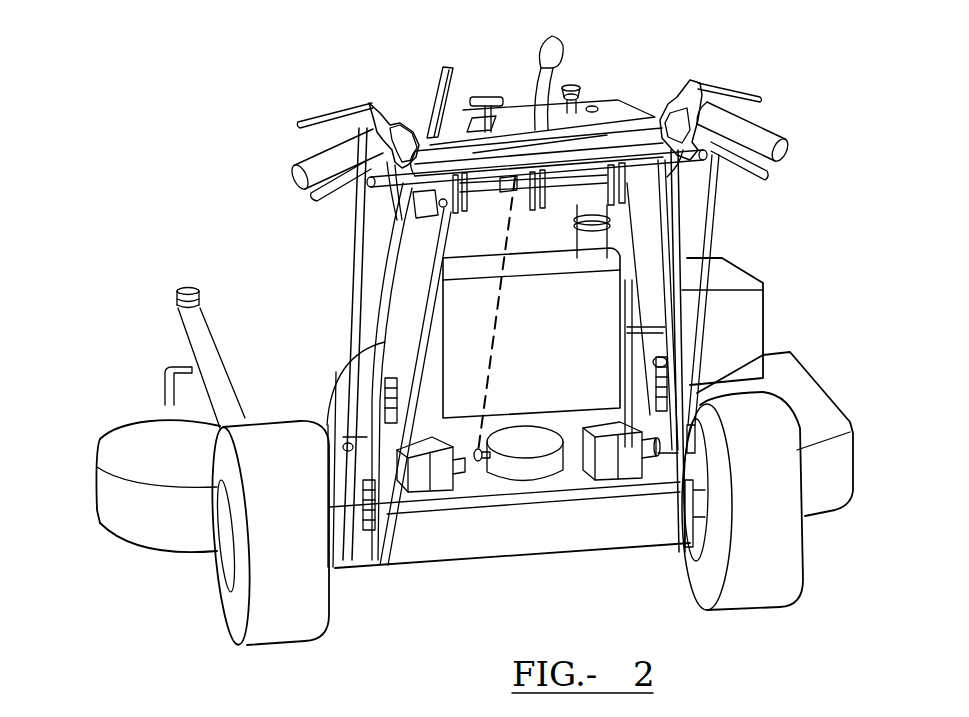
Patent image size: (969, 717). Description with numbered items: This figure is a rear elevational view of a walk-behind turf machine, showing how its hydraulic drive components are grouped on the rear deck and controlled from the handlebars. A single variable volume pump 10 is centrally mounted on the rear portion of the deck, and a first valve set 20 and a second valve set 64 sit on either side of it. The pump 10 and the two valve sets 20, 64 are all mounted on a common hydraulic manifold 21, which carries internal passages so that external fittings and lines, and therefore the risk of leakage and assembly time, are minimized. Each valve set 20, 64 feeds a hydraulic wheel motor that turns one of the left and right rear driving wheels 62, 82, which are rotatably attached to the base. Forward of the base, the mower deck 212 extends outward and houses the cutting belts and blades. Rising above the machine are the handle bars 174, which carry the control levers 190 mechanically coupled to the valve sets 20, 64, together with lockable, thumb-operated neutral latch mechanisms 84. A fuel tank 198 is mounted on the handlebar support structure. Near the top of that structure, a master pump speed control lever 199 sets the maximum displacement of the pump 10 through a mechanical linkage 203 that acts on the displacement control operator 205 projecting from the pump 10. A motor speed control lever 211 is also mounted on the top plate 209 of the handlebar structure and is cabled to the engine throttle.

The variable volume pump 10 is at (557, 540).
The first valve set 20 is at (417, 570).
The common hydraulic manifold 21 is at (528, 542).
The left rear driving wheel 62 is at (270, 608).
The second valve set 64 is at (653, 540).
The right rear driving wheel 82 is at (785, 557).
The neutral latch mechanism 84 is at (392, 125).
The handle bar 174 is at (307, 167).
The control lever 190 is at (338, 207).
The fuel tank 198 is at (603, 313).
The master pump speed control lever 199 is at (563, 48).
The mechanical linkage 203 is at (500, 300).
The displacement control operator 205 is at (482, 453).
The top plate 209 is at (598, 123).
The motor speed control lever 211 is at (472, 96).
The mower deck 212 is at (138, 457).